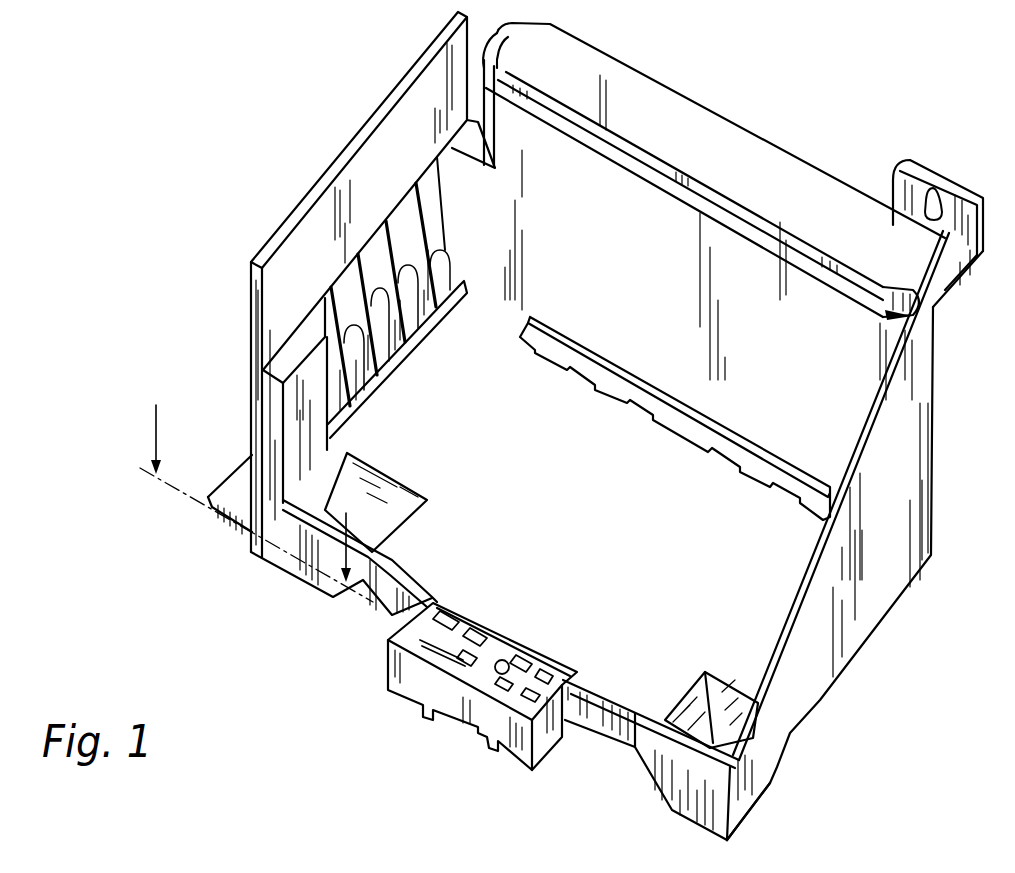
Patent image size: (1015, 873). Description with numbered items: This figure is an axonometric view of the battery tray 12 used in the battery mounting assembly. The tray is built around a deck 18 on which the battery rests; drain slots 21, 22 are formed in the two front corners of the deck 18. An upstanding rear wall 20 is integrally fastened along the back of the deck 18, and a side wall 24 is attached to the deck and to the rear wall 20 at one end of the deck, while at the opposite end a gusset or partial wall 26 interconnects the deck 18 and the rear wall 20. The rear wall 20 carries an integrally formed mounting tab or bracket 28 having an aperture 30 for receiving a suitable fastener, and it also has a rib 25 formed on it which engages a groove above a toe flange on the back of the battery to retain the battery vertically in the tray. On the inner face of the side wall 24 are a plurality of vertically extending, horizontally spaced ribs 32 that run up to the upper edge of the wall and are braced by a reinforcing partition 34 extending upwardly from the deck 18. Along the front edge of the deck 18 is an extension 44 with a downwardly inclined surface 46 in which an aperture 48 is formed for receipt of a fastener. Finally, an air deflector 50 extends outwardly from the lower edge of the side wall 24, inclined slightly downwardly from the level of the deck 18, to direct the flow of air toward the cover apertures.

The battery tray 12 is at (331, 118).
The deck 18 is at (675, 605).
The rear wall 20 is at (645, 243).
The drain slot 21 is at (300, 555).
The drain slot 22 is at (747, 748).
The side wall 24 is at (252, 390).
The rib 25 is at (828, 510).
The gusset or partial wall 26 is at (880, 400).
The mounting tab or bracket 28 is at (893, 178).
The aperture 30 is at (938, 195).
The ribs 32 is at (345, 335).
The reinforcing partition 34 is at (360, 432).
The extension 44 is at (449, 741).
The downwardly inclined surface 46 is at (483, 665).
The aperture 48 is at (508, 665).
The air deflector 50 is at (240, 475).